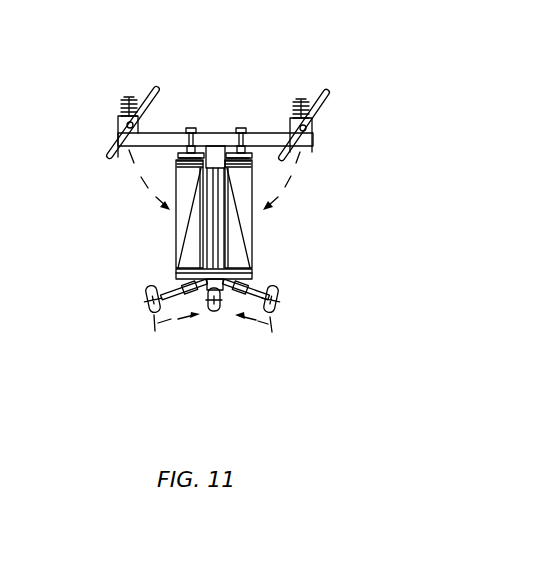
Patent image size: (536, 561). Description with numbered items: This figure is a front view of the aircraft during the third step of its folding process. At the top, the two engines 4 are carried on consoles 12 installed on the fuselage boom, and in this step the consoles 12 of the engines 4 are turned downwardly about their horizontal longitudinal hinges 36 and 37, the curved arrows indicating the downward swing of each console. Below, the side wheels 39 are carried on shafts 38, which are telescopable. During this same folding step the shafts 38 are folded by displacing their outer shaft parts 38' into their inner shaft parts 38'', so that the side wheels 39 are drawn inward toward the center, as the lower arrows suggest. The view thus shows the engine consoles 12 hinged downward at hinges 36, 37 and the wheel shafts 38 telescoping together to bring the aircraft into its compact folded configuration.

The engine 4 is at (121, 127).
The console 12 is at (180, 138).
The horizontal longitudinal hinge 36 is at (190, 136).
The horizontal longitudinal hinge 37 is at (240, 136).
The shaft 38 is at (149, 257).
The outer shaft part 38' is at (218, 336).
The inner shaft part 38'' is at (285, 257).
The wheel 39 is at (153, 303).